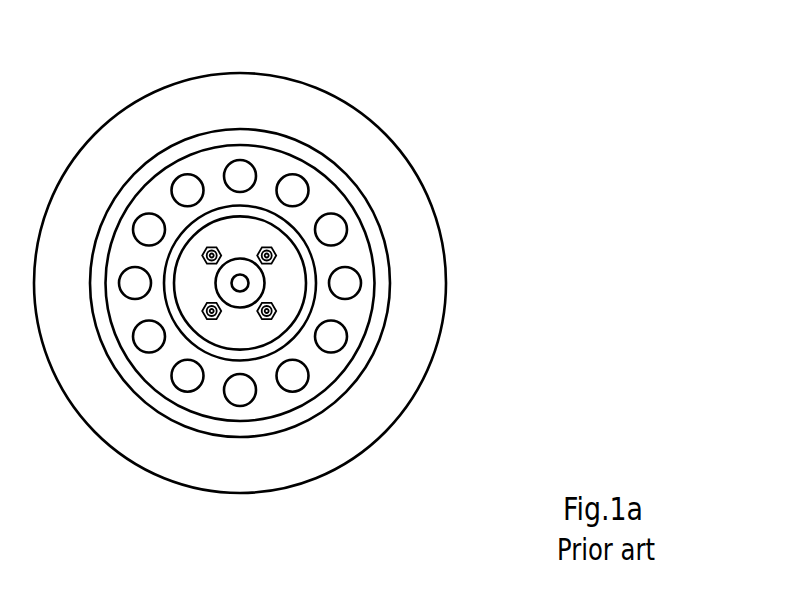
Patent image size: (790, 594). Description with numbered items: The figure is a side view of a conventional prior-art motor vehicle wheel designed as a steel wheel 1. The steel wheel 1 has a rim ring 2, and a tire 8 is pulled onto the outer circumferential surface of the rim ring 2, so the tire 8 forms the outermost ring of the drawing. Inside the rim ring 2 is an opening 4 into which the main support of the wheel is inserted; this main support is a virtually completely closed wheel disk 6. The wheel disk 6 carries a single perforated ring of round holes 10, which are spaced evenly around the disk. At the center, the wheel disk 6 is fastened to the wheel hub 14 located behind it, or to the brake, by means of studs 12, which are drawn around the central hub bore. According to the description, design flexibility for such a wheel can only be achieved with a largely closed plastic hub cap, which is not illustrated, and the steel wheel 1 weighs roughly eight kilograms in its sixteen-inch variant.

The steel wheel 1 is at (393, 100).
The rim ring 2 is at (368, 215).
The opening 4 is at (390, 254).
The wheel disk 6 is at (363, 308).
The tire 8 is at (300, 103).
The round holes 10 is at (340, 343).
The studs 12 is at (274, 317).
The wheel hub 14 is at (240, 290).